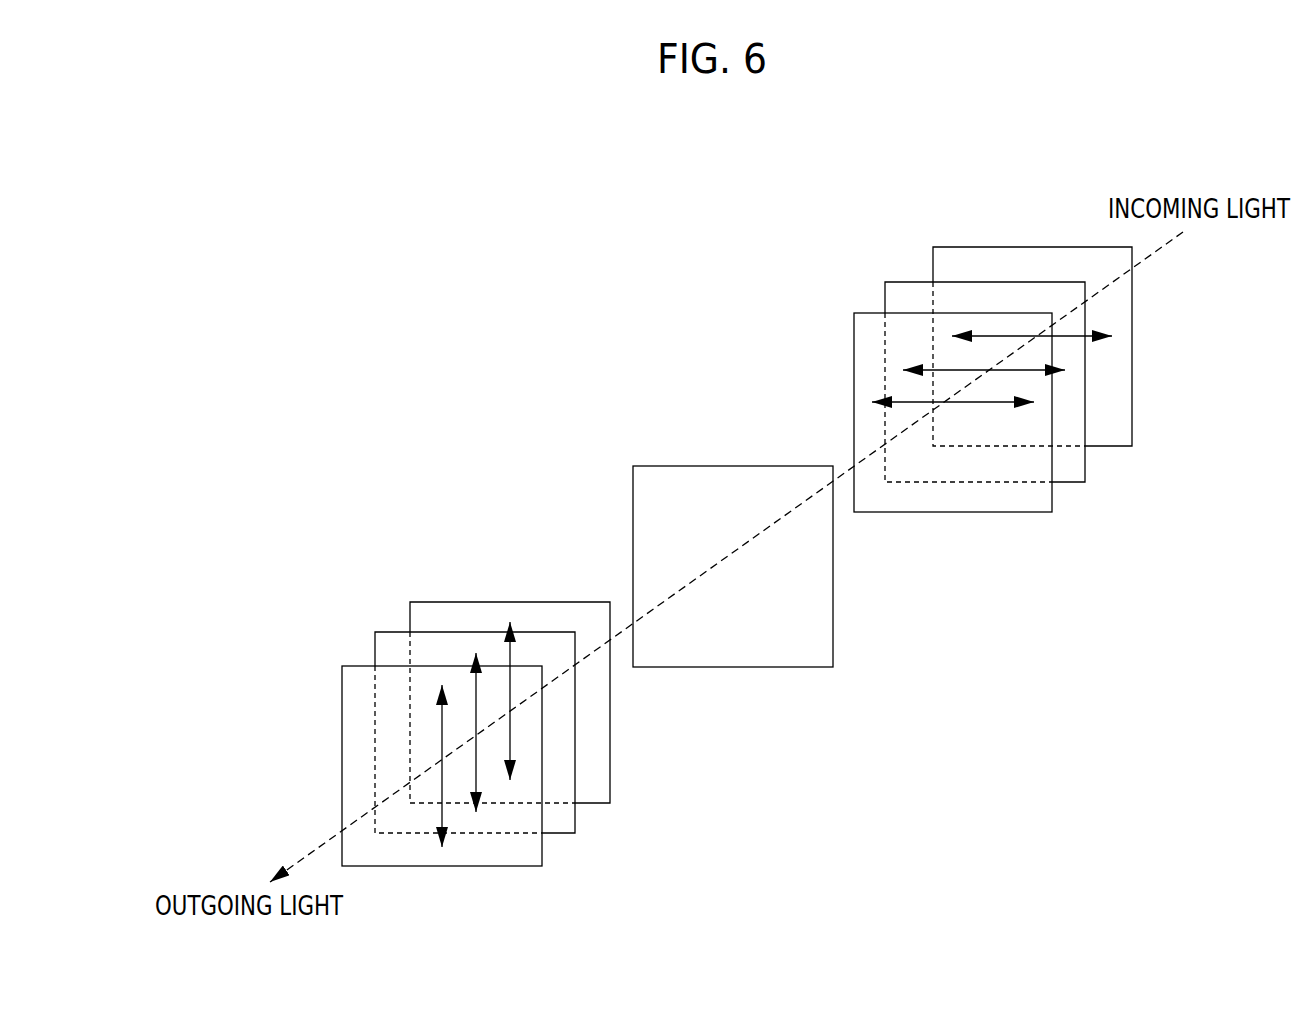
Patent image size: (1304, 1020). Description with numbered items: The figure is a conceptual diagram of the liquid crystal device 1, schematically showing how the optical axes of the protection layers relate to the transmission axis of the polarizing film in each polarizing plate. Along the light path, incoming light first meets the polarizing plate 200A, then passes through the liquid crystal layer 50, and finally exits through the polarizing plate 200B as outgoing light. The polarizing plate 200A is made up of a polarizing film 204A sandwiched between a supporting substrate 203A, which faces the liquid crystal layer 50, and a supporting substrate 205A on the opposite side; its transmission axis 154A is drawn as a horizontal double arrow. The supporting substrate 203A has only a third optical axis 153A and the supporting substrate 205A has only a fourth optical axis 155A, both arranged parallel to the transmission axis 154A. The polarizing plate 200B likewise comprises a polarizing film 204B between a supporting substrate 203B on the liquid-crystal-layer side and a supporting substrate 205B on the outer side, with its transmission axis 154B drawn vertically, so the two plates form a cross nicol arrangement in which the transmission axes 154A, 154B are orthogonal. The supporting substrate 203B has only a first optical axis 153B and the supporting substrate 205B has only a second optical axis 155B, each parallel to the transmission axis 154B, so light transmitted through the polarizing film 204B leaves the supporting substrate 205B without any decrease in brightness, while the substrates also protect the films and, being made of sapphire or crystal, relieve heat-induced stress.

The liquid crystal device 1 is at (245, 535).
The liquid crystal layer 50 is at (661, 466).
The polarizing plate 200A is at (914, 164).
The polarizing plate 200B is at (400, 512).
The supporting substrate 203A is at (875, 312).
The polarizing film 204A is at (905, 282).
The supporting substrate 205A is at (952, 246).
The supporting substrate 203B is at (424, 602).
The polarizing film 204B is at (392, 632).
The supporting substrate 205B is at (368, 666).
The third optical axis 153A is at (1000, 404).
The transmission axis 154A is at (1030, 372).
The fourth optical axis 155A is at (1067, 338).
The first optical axis 153B is at (512, 737).
The transmission axis 154B is at (478, 768).
The second optical axis 155B is at (445, 810).